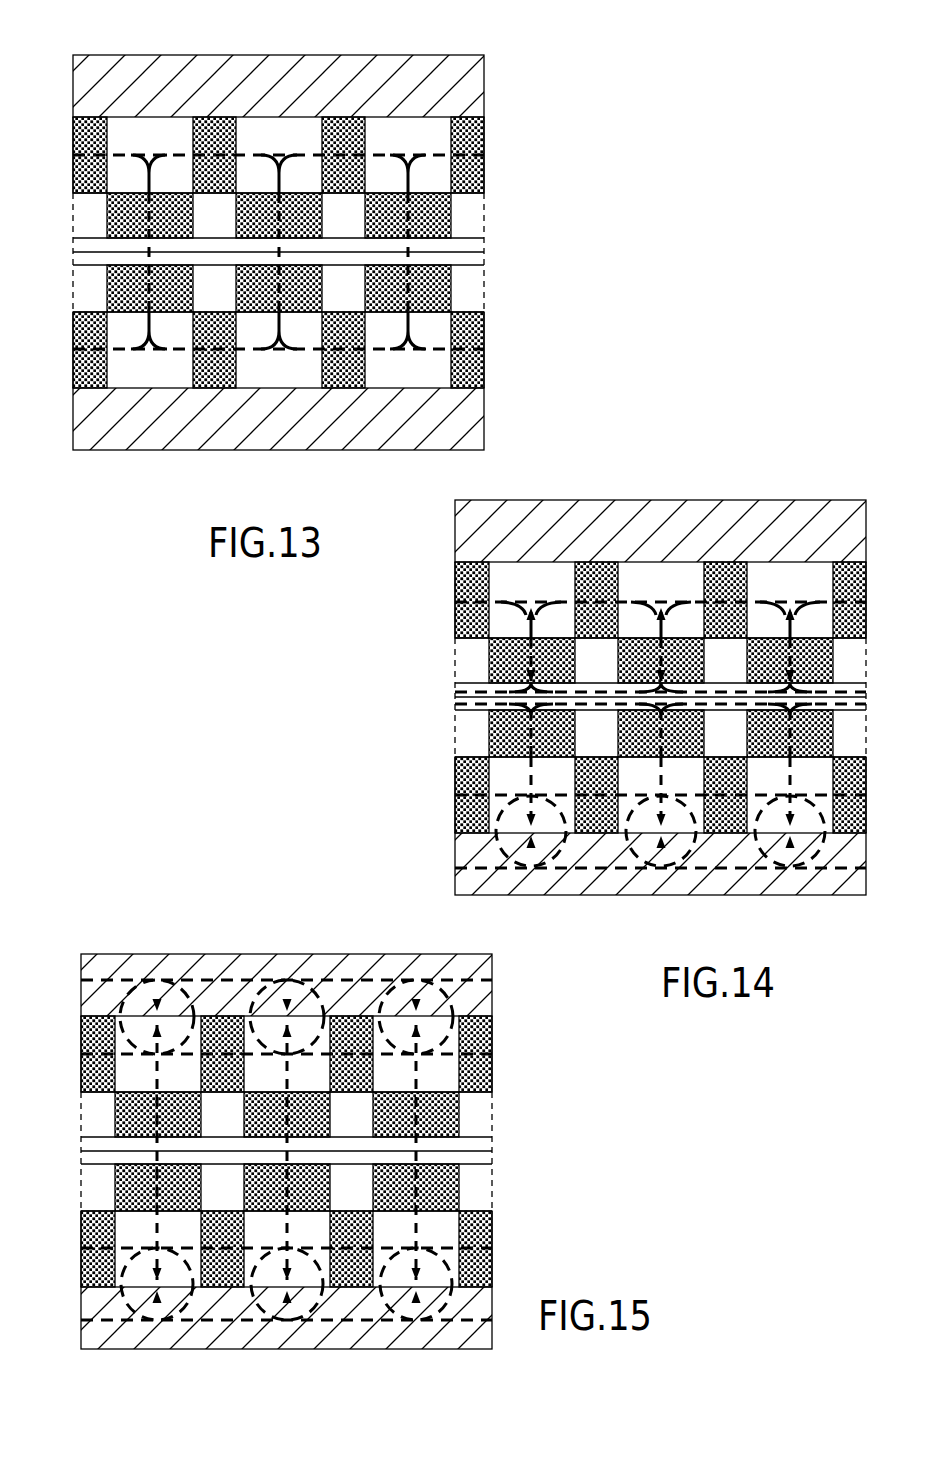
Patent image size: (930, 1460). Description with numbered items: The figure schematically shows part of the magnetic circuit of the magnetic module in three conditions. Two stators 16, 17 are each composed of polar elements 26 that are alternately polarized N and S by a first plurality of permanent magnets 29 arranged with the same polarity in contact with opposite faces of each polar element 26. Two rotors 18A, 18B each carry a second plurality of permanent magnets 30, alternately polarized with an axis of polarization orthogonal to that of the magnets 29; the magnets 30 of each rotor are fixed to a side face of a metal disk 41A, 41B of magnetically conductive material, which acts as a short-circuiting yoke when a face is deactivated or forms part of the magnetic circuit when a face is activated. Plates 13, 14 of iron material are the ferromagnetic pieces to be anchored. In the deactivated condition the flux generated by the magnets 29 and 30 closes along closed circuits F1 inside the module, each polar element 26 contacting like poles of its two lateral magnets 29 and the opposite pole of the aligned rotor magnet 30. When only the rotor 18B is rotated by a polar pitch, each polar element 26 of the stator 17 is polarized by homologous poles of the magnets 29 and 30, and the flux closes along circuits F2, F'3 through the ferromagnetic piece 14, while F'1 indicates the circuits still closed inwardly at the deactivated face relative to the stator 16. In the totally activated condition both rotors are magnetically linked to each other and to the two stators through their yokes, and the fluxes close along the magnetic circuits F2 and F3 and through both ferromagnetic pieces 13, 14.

In FIG. 13, the plate 13 is at (458, 98).
In FIG. 14, the plate 13 is at (660, 508).
In FIG. 15, the plate 13 is at (286, 960).
In FIG. 13, the plate 14 is at (400, 425).
In FIG. 14, the plate 14 is at (666, 893).
In FIG. 15, the plate 14 is at (286, 1339).
In FIG. 13, the stator 16 is at (37, 170).
In FIG. 14, the stator 16 is at (640, 600).
In FIG. 15, the stator 16 is at (265, 1054).
In FIG. 13, the stator 17 is at (37, 362).
In FIG. 14, the stator 17 is at (640, 795).
In FIG. 15, the stator 17 is at (265, 1249).
In FIG. 13, the rotor 18A is at (72, 230).
In FIG. 14, the rotor 18A is at (636, 697).
In FIG. 15, the rotor 18A is at (260, 1151).
In FIG. 13, the rotor 18B is at (72, 296).
In FIG. 14, the rotor 18B is at (432, 730).
In FIG. 15, the rotor 18B is at (55, 1183).
In FIG. 13, the polar element 26 is at (258, 140).
In FIG. 14, the polar element 26 is at (625, 706).
In FIG. 15, the polar element 26 is at (280, 1148).
In FIG. 13, the permanent magnet 29 is at (203, 140).
In FIG. 14, the permanent magnet 29 is at (660, 705).
In FIG. 15, the permanent magnet 29 is at (286, 1148).
In FIG. 13, the permanent magnet 30 is at (430, 207).
In FIG. 14, the permanent magnet 30 is at (705, 710).
In FIG. 15, the permanent magnet 30 is at (346, 1180).
In FIG. 13, the metal disk 41A is at (490, 243).
In FIG. 14, the metal disk 41A is at (691, 660).
In FIG. 15, the metal disk 41A is at (336, 1134).
In FIG. 13, the metal disk 41B is at (490, 258).
In FIG. 14, the metal disk 41B is at (692, 736).
In FIG. 15, the metal disk 41B is at (336, 1177).
In FIG. 13, the closed circuit F1 is at (410, 175).
In FIG. 14, the magnetic circuit F'1 is at (690, 591).
In FIG. 14, the closed circuit F'3 is at (604, 715).
In FIG. 14, the magnetic circuit F2 is at (612, 812).
In FIG. 15, the magnetic circuit F2 is at (279, 1319).
In FIG. 15, the magnetic circuit F3 is at (265, 1092).